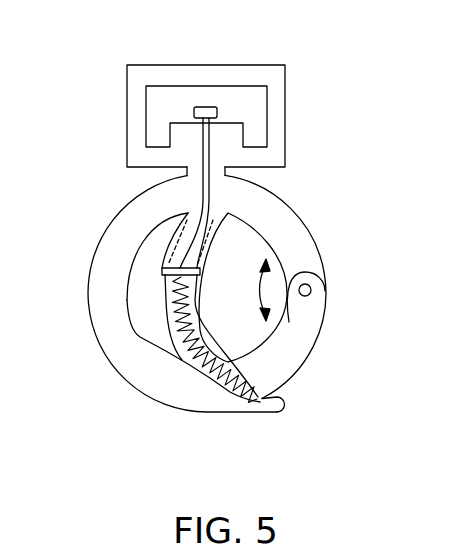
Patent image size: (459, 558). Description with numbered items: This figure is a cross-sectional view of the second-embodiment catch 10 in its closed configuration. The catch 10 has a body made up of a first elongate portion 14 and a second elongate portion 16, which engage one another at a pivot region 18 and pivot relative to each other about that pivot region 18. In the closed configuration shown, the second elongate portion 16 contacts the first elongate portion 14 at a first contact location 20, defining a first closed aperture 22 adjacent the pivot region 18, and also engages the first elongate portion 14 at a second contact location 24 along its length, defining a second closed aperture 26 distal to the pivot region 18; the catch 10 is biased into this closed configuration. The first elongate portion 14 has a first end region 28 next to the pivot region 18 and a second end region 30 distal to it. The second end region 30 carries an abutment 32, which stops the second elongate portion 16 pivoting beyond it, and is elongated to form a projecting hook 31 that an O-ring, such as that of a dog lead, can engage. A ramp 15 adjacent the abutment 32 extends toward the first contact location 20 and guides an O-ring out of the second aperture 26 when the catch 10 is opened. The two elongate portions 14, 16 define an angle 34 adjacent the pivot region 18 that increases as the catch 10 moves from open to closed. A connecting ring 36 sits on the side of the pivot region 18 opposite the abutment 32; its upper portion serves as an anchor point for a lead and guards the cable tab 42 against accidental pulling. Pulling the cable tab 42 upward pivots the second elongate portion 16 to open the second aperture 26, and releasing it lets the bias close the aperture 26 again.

The catch 10 is at (116, 399).
The first elongate portion 14 is at (110, 318).
The ramp 15 is at (182, 361).
The second elongate portion 16 is at (292, 353).
The pivot region 18 is at (311, 286).
The first contact location 20 is at (160, 268).
The first closed aperture 22 is at (233, 260).
The second contact location 24 is at (258, 398).
The second closed aperture 26 is at (142, 285).
The first end region 28 is at (302, 258).
The second end region 30 is at (188, 393).
The projecting hook 31 is at (280, 394).
The abutment 32 is at (211, 380).
The angle 34 is at (258, 292).
The connecting ring 36 is at (287, 84).
The cable tab 42 is at (204, 107).